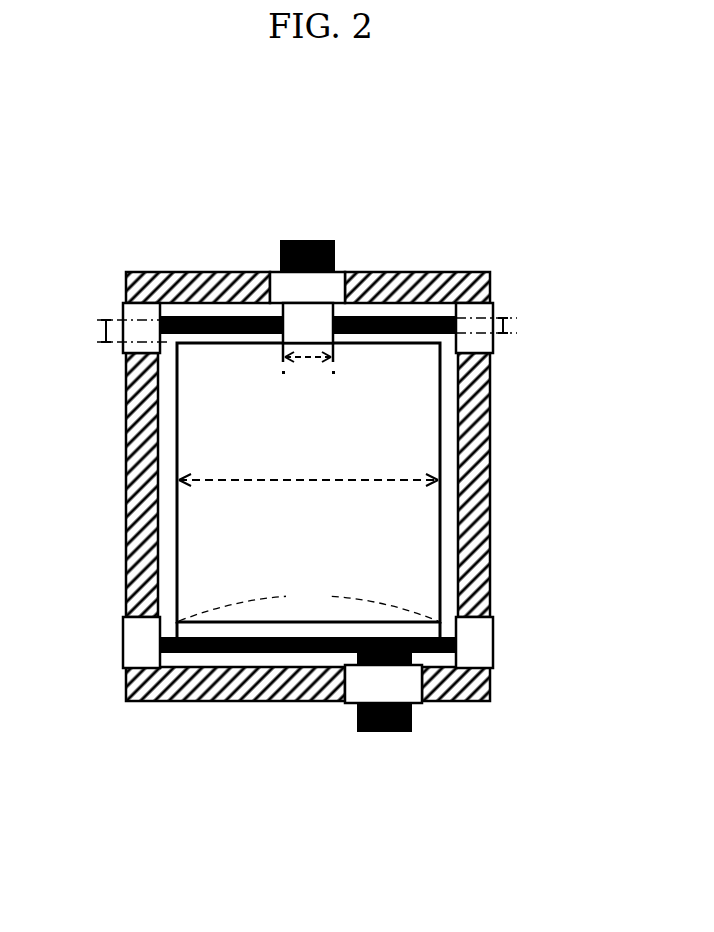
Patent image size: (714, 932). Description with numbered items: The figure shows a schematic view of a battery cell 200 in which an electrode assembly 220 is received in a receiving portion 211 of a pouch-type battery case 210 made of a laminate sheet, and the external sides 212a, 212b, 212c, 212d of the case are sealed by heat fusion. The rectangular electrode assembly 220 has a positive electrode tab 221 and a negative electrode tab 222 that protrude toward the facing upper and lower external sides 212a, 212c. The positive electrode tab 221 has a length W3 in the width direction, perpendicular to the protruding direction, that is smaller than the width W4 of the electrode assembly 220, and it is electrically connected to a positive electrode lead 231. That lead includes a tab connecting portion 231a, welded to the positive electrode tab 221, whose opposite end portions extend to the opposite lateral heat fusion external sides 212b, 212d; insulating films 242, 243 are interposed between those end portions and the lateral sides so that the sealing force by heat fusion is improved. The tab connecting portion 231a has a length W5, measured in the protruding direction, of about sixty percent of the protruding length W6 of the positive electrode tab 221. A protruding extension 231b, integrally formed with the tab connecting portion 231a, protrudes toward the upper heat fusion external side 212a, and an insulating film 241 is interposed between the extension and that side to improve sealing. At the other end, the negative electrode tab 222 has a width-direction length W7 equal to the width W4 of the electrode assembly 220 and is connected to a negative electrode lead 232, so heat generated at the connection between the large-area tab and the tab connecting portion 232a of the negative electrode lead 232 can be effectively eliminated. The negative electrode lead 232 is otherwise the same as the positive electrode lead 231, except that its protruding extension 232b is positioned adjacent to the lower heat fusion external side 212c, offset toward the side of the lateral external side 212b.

The battery cell 200 is at (132, 230).
The pouch-type battery case 210 is at (324, 492).
The receiving portion 211 is at (447, 483).
The upper heat fusion external side 212a is at (481, 272).
The lateral heat fusion external side 212b is at (478, 550).
The lower heat fusion external side 212c is at (474, 702).
The lateral heat fusion external side 212d is at (135, 577).
The electrode assembly 220 is at (252, 490).
The positive electrode tab 221 is at (329, 381).
The negative electrode tab 222 is at (367, 603).
The positive electrode lead 231 is at (379, 280).
The tab connecting portion 231a is at (363, 317).
The protruding extension 231b is at (336, 240).
The negative electrode lead 232 is at (293, 710).
The tab connecting portion 232a is at (321, 653).
The protruding extension 232b is at (358, 732).
The insulating film 241 is at (268, 271).
The insulating film 242 is at (492, 352).
The insulating film 243 is at (123, 355).
The length of positive electrode tab in width direction W3 is at (309, 358).
The width of electrode assembly W4 is at (307, 480).
The length of tab connecting portion W5 is at (512, 321).
The protruding length of positive electrode tab W6 is at (102, 333).
The length of negative electrode tab in width direction W7 is at (308, 602).